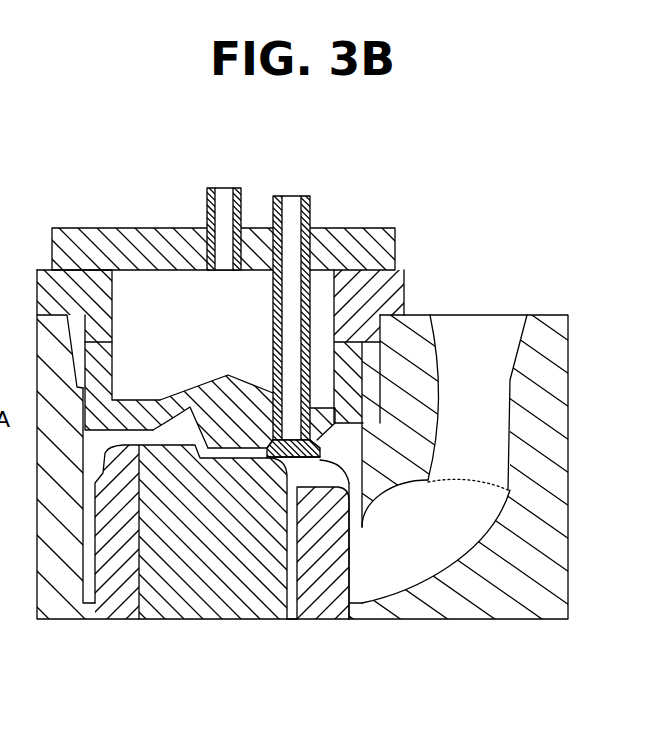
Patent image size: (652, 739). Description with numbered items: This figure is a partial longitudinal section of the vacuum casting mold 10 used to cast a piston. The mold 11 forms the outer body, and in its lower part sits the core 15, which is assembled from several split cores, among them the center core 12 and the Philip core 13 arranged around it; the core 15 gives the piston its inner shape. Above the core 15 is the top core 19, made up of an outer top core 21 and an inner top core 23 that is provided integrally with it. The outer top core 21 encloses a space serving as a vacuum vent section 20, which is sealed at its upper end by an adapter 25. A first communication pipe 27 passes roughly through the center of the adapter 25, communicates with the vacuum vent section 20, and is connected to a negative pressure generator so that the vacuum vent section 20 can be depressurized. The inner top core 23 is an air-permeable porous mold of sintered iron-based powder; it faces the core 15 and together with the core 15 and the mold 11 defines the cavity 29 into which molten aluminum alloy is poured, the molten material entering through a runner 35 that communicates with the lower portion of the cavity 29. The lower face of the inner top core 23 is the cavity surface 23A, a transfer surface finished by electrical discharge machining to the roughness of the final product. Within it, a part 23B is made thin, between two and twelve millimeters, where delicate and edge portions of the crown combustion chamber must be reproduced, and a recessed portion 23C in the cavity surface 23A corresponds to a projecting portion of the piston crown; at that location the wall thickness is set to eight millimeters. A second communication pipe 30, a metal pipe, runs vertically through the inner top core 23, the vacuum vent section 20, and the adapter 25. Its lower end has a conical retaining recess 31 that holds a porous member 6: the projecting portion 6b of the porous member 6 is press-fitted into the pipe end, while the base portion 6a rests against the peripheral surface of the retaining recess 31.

The vacuum casting mold 10 is at (425, 213).
The mold 11 is at (492, 625).
The center core 12 is at (186, 432).
The Philip core 13 is at (118, 608).
The core 15 is at (298, 656).
The top core 19 is at (425, 278).
The vacuum vent section 20 is at (143, 287).
The outer top core 21 is at (83, 278).
The inner top core 23 is at (242, 393).
The cavity surface 23A is at (248, 452).
The part 23B is at (193, 392).
The recessed portion 23C is at (187, 422).
The adapter 25 is at (180, 233).
The first communication pipe 27 is at (241, 198).
The cavity 29 is at (413, 560).
The second communication pipe 30 is at (296, 194).
The retaining recess 31 is at (545, 492).
The runner 35 is at (430, 590).
The porous member 6 is at (320, 462).
The base portion 6a is at (290, 458).
The projecting portion 6b is at (312, 410).